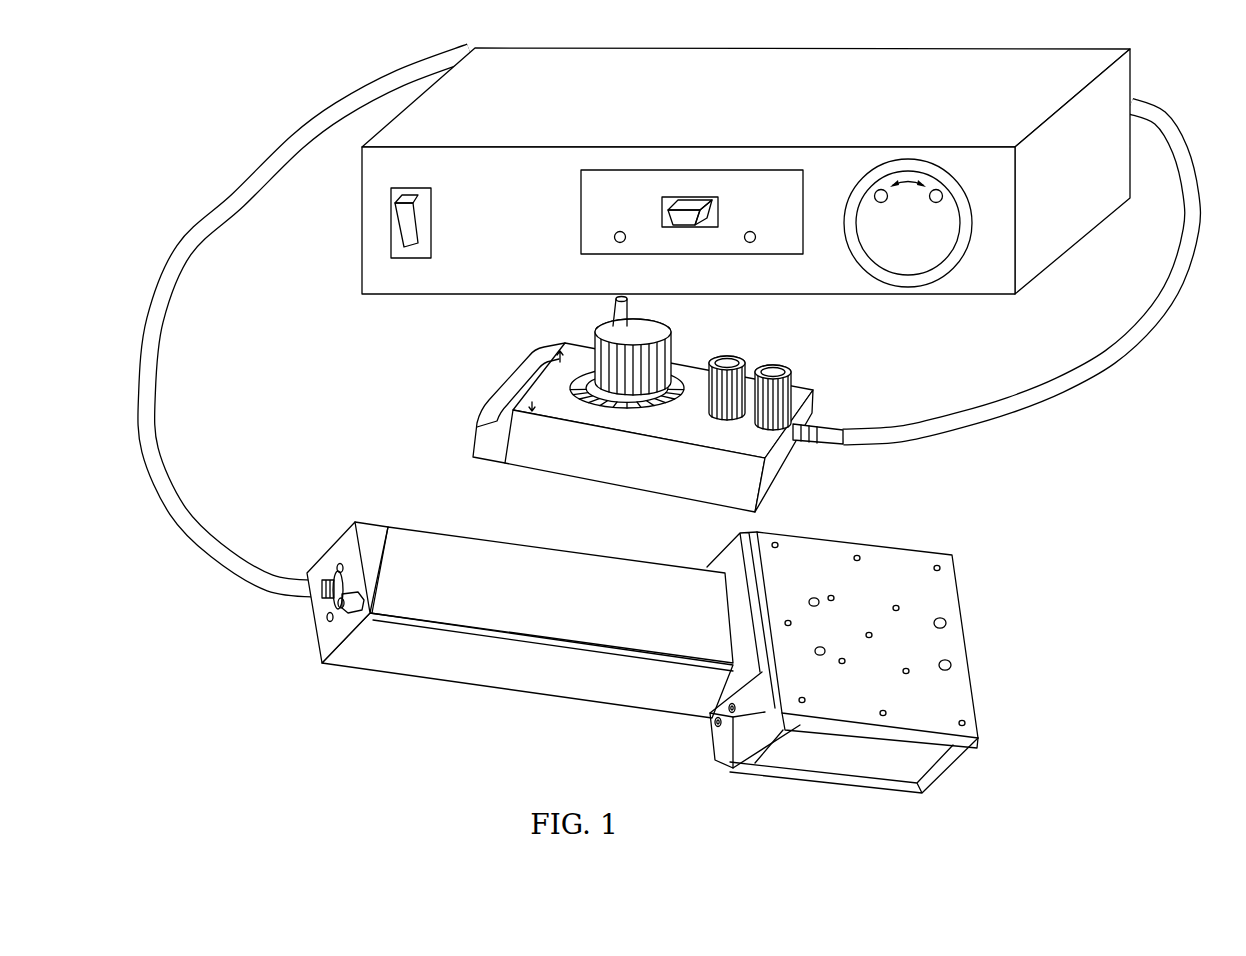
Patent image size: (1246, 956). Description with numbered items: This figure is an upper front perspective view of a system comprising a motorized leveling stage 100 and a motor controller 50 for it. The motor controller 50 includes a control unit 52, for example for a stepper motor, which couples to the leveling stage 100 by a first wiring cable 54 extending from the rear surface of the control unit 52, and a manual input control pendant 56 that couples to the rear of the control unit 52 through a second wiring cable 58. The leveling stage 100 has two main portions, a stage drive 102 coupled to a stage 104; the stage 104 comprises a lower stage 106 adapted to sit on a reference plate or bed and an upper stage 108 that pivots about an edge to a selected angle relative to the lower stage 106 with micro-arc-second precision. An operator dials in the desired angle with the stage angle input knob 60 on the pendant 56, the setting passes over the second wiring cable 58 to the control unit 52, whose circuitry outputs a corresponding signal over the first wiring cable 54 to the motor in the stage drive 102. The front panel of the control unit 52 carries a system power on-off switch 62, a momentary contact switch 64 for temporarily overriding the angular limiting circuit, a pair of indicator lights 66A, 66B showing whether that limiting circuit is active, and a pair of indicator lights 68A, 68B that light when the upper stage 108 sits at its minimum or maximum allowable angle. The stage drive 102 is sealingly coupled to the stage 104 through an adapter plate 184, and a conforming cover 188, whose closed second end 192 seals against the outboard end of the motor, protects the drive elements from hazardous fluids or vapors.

The motor controller 50 is at (466, 349).
The control unit 52 is at (446, 294).
The first wiring cable 54 is at (150, 428).
The manual input control pendant 56 is at (572, 470).
The second wiring cable 58 is at (990, 410).
The stage angle input knob 60 is at (663, 331).
The system power on-off switch 62 is at (403, 222).
The momentary contact switch 64 is at (674, 228).
The indicator light 66A is at (618, 244).
The indicator light 66B is at (748, 244).
The indicator light 68A is at (877, 191).
The indicator light 68B is at (940, 191).
The leveling stage 100 is at (1012, 527).
The stage drive 102 is at (489, 627).
The stage 104 is at (892, 684).
The lower stage 106 is at (910, 794).
The upper stage 108 is at (952, 643).
The adapter plate 184 is at (710, 739).
The conforming cover 188 is at (613, 567).
The second end 192 is at (325, 637).